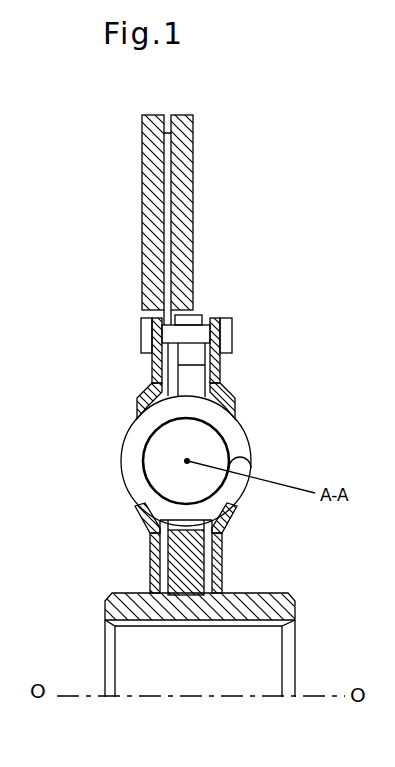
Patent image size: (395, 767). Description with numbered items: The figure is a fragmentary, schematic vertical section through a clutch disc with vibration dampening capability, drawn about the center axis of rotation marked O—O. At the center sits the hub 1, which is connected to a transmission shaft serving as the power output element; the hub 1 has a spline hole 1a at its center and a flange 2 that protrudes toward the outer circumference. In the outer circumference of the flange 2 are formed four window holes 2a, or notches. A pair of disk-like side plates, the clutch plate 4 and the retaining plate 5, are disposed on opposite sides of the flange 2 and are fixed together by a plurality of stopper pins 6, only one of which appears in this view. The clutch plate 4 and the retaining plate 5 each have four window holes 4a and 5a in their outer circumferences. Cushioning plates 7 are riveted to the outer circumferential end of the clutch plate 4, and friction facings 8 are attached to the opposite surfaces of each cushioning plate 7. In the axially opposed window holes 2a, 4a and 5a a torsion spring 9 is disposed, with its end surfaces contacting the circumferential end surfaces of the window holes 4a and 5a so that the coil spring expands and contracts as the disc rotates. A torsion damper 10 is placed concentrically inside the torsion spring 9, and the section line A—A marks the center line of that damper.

The hub 1 is at (285, 593).
The spline hole 1a is at (265, 626).
The flange 2 is at (218, 567).
The window holes 2a is at (188, 383).
The clutch plate 4 is at (134, 549).
The window holes 4a is at (140, 412).
The retaining plate 5 is at (238, 541).
The window holes 5a is at (235, 408).
The stopper pins 6 is at (147, 338).
The cushioning plates 7 is at (167, 295).
The friction facings 8 is at (148, 245).
The torsion spring 9 is at (243, 452).
The torsion damper 10 is at (163, 470).